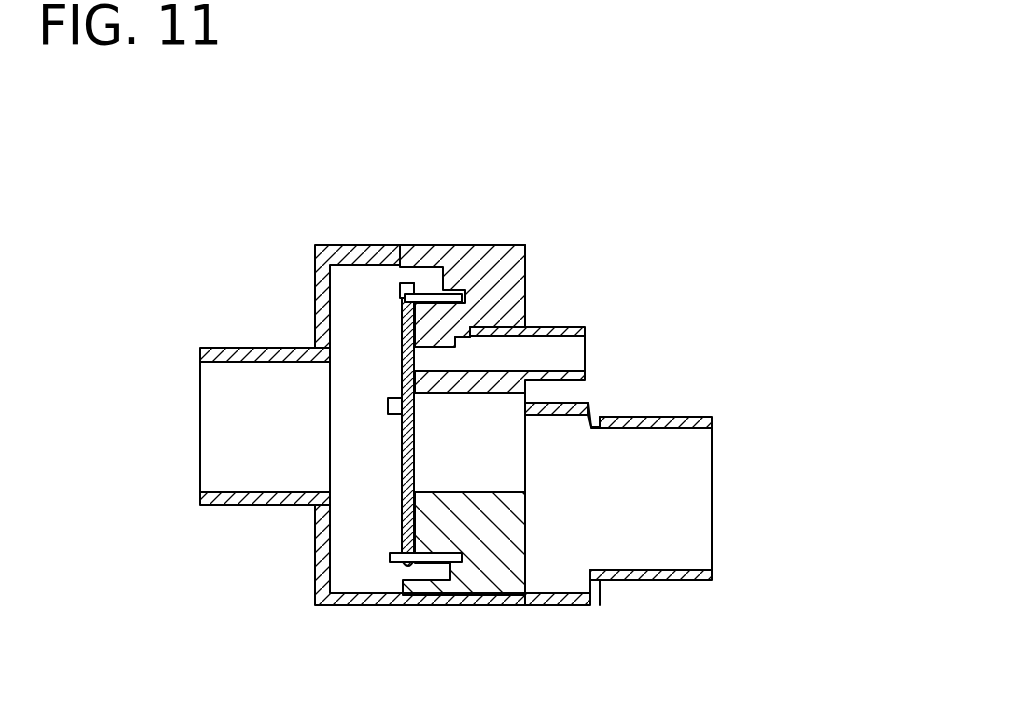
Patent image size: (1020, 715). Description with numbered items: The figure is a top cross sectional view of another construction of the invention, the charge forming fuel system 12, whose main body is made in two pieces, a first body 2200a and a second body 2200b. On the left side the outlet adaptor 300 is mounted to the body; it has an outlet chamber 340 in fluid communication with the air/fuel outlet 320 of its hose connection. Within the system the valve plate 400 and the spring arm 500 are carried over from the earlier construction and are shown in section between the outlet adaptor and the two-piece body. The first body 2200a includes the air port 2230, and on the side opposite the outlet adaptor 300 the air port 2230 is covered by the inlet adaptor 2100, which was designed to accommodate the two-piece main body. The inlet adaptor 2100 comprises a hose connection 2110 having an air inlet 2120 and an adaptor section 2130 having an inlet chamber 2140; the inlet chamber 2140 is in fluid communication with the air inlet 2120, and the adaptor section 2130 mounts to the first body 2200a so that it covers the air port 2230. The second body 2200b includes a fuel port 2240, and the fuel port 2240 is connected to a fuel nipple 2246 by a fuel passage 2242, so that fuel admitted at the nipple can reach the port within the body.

The charge forming fuel system 12 is at (710, 165).
The outlet adaptor 300 is at (350, 247).
The air/fuel outlet 320 is at (215, 397).
The outlet chamber 340 is at (352, 333).
The valve plate 400 is at (402, 500).
The spring arm 500 is at (388, 410).
The fuel port 2240 is at (450, 347).
The fuel passage 2242 is at (480, 327).
The second body 2200b is at (527, 245).
The first body 2200a is at (489, 603).
The fuel nipple 2246 is at (585, 326).
The inlet adaptor 2100 is at (565, 407).
The hose connection 2110 is at (697, 417).
The air inlet 2120 is at (707, 457).
The air port 2230 is at (508, 467).
The adaptor section 2130 is at (597, 593).
The inlet chamber 2140 is at (567, 582).